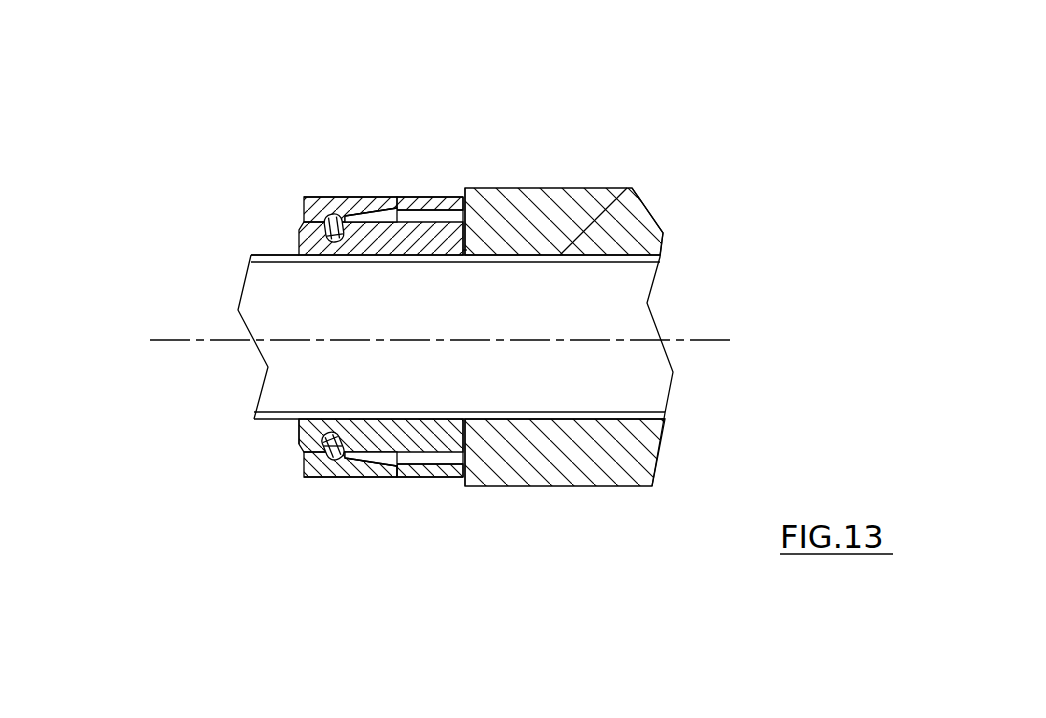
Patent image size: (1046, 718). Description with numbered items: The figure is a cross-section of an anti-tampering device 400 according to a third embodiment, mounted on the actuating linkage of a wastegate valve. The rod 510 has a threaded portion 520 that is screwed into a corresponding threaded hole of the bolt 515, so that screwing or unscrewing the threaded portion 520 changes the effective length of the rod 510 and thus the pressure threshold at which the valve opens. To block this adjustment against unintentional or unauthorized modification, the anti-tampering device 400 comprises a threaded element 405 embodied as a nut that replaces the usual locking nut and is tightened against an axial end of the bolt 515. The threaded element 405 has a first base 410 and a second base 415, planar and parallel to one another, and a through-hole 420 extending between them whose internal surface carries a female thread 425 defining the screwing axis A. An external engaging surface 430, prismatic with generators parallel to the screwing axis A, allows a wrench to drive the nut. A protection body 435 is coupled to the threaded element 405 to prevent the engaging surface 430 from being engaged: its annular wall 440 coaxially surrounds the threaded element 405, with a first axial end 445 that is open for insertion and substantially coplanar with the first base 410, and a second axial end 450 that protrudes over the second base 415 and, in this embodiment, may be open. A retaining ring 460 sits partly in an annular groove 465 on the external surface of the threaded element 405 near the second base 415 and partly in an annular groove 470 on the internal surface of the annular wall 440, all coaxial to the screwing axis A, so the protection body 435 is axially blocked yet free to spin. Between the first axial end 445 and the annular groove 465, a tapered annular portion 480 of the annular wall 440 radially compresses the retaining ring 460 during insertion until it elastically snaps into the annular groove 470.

The anti-tampering device 400 is at (298, 163).
The threaded element 405 is at (423, 460).
The first base 410 is at (473, 445).
The second base 415 is at (293, 232).
The through-hole 420 is at (417, 243).
The female thread 425 is at (466, 252).
The engaging surface 430 is at (441, 203).
The protection body 435 is at (357, 207).
The annular wall 440 is at (380, 470).
The first axial end 445 is at (468, 195).
The second axial end 450 is at (296, 204).
The retaining ring 460 is at (330, 470).
The annular groove 465 is at (303, 462).
The annular groove 470 is at (342, 467).
The tapered annular portion 480 is at (373, 208).
The rod 510 is at (279, 358).
The bolt 515 is at (620, 232).
The threaded portion 520 is at (250, 256).
The screwing axis A is at (716, 338).